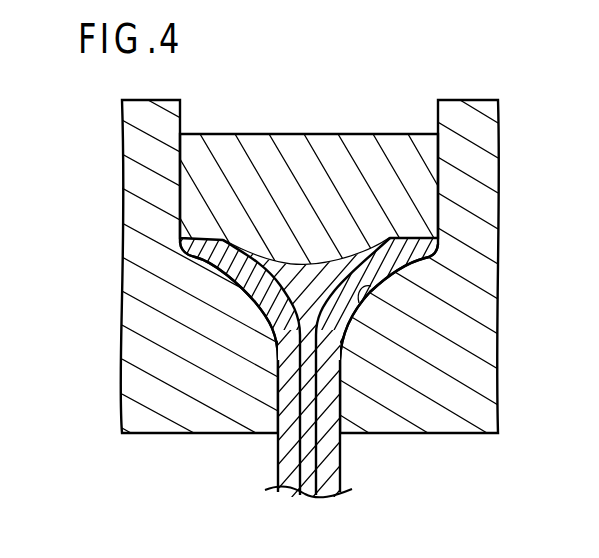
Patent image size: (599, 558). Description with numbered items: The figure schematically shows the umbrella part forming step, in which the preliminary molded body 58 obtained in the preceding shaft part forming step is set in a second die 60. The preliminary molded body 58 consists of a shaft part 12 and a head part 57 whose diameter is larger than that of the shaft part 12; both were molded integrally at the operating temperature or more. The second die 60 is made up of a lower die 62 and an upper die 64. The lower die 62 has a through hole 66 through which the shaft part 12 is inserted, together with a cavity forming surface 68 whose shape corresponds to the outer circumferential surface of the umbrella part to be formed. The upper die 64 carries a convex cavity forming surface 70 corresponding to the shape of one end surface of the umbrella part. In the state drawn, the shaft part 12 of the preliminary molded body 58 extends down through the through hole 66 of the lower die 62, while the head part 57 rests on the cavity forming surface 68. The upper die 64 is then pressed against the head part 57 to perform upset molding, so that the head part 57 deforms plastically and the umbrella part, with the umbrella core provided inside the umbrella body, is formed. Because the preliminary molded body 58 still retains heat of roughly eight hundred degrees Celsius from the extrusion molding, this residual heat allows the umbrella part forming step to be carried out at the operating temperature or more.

The second die 60 is at (478, 58).
The lower die 62 is at (461, 112).
The upper die 64 is at (395, 140).
The preliminary molded body 58 is at (48, 323).
The head part 57 is at (213, 273).
The shaft part 12 is at (277, 452).
The through hole 66 is at (300, 396).
The cavity forming surface 68 is at (365, 288).
The convex cavity forming surface 70 is at (388, 259).